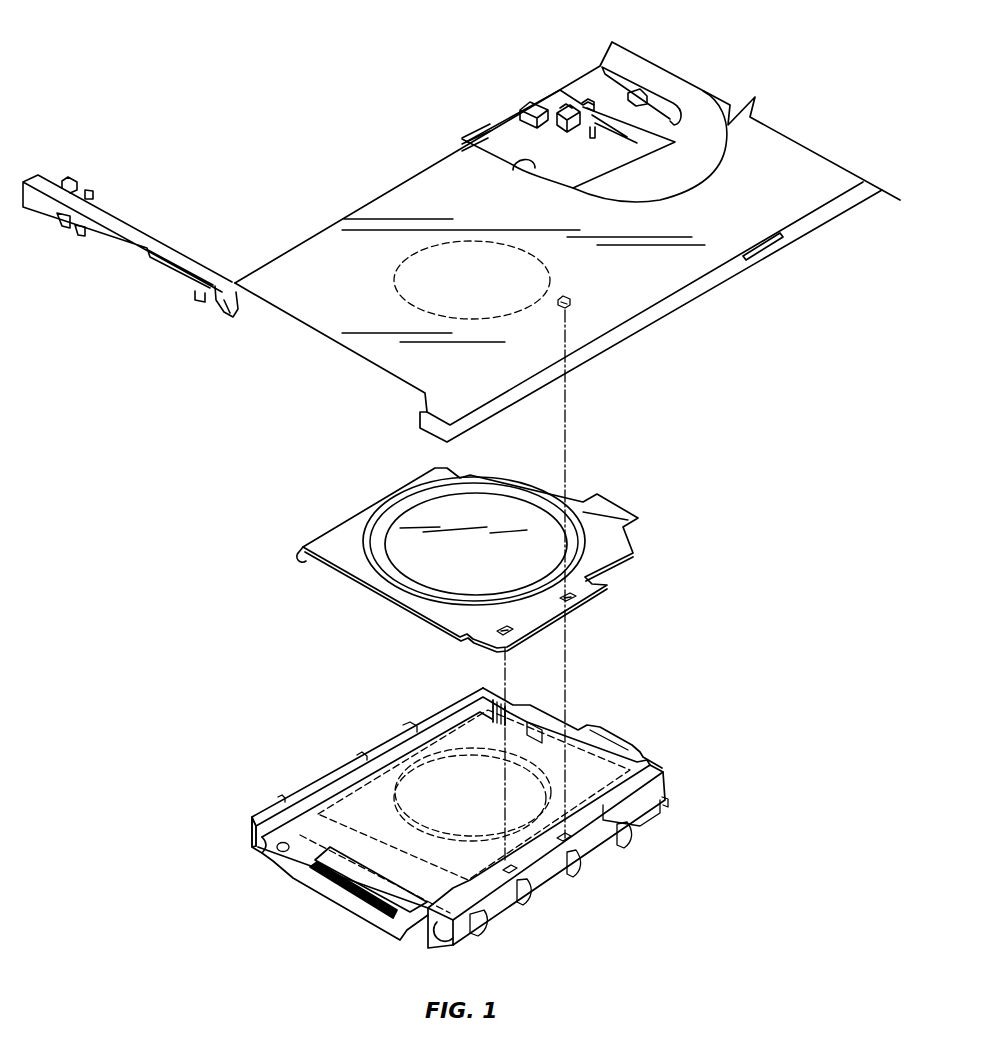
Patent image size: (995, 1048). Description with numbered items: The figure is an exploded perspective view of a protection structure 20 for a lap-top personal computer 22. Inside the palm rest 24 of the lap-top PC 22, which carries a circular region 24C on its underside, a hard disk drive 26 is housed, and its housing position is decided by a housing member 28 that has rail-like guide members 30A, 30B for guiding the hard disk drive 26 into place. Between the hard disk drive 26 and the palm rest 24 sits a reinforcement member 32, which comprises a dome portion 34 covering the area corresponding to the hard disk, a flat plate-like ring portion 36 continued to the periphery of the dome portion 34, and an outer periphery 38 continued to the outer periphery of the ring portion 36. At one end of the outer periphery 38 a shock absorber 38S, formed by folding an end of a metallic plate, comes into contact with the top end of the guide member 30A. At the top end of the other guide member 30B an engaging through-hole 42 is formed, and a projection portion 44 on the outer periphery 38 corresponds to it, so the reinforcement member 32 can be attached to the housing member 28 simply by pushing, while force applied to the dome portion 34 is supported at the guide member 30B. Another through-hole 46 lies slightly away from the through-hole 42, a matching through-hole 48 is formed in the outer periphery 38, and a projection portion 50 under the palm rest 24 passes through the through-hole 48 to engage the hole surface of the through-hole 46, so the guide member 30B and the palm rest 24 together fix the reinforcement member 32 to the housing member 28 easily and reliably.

The protection structure 20 is at (224, 494).
The lap-top personal computer 22 is at (285, 46).
The palm rest 24 is at (310, 315).
The circular contact region 24C is at (400, 267).
The hard disk drive 26 is at (393, 780).
The housing member 28 is at (641, 704).
The guide member 30A is at (337, 770).
The guide member 30B is at (532, 858).
The reinforcement member 32 is at (654, 464).
The dome portion 34 is at (437, 515).
The ring portion 36 is at (383, 533).
The outer periphery 38 is at (360, 572).
The shock absorber 38S is at (299, 560).
The engaging through-hole 42 is at (517, 873).
The projection portion 44 is at (513, 633).
The through-hole 46 is at (578, 841).
The through-hole 48 is at (577, 601).
The projection portion 50 is at (566, 292).